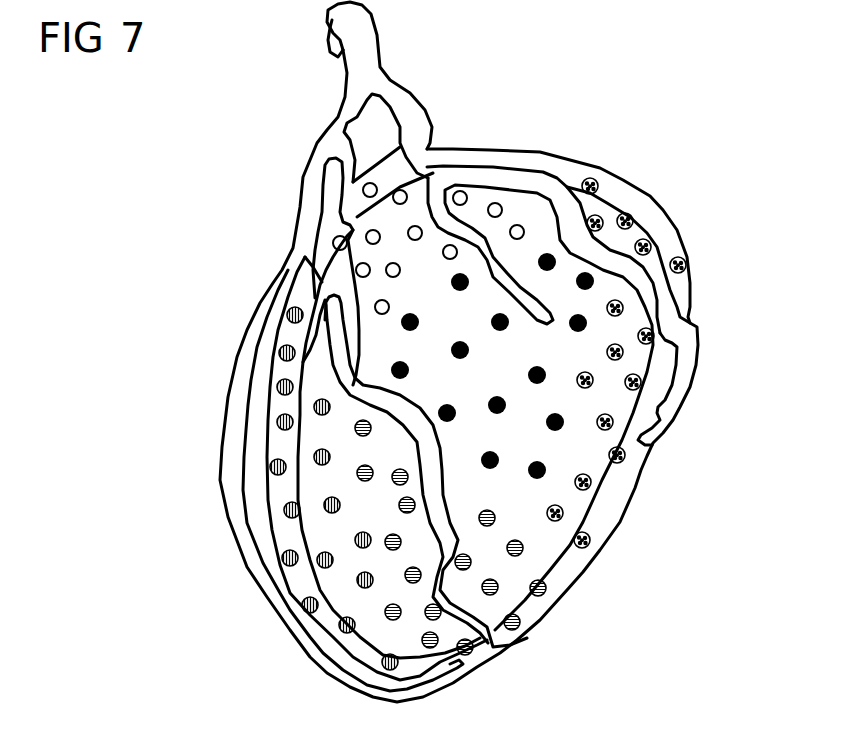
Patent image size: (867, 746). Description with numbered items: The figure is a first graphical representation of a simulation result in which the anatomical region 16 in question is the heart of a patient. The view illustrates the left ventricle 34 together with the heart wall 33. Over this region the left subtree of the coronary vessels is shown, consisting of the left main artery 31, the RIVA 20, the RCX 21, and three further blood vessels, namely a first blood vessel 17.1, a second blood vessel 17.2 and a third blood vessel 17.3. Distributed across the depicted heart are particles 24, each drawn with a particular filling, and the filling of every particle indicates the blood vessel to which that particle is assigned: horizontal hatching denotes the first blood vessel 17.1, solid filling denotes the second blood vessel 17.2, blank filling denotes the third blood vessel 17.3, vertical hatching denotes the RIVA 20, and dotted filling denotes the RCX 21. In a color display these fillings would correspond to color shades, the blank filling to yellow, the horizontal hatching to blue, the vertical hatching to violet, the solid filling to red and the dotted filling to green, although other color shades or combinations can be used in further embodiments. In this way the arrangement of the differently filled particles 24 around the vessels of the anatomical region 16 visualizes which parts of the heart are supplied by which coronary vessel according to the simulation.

The anatomical region 16 is at (397, 376).
The first blood vessel 17.1 is at (427, 507).
The second blood vessel 17.2 is at (540, 354).
The third blood vessel 17.3 is at (346, 388).
The RIVA 20 is at (332, 474).
The RCX 21 is at (558, 205).
The particles 24 is at (698, 322).
The left main artery 31 is at (385, 91).
The heart wall 33 is at (618, 328).
The left ventricle 34 is at (494, 537).